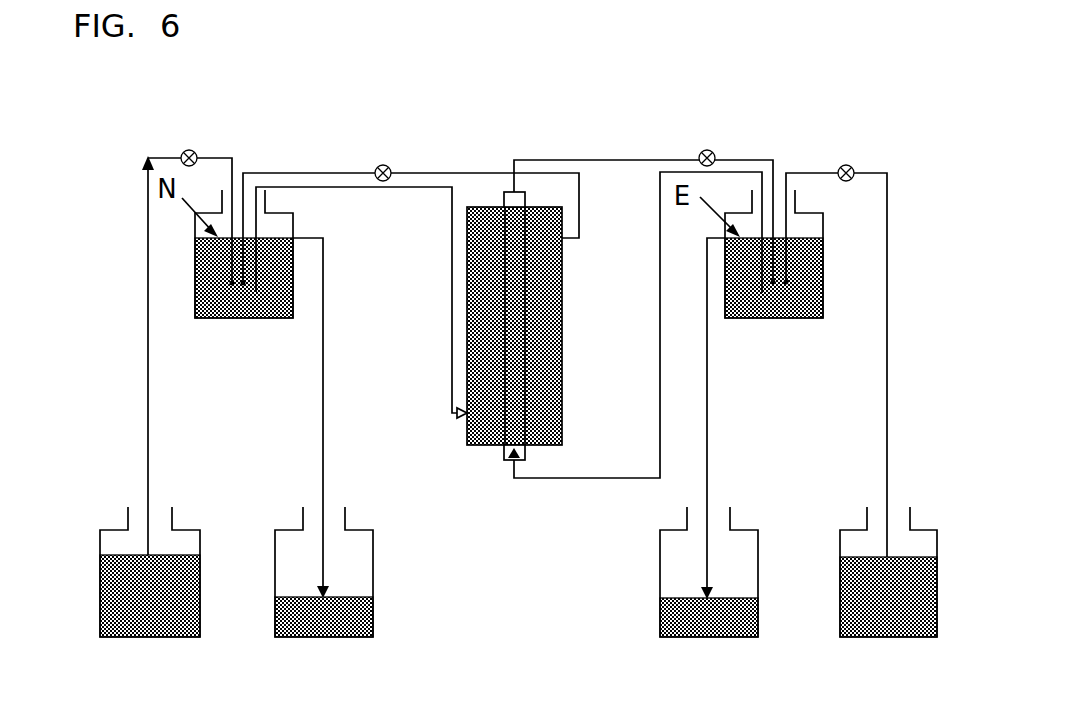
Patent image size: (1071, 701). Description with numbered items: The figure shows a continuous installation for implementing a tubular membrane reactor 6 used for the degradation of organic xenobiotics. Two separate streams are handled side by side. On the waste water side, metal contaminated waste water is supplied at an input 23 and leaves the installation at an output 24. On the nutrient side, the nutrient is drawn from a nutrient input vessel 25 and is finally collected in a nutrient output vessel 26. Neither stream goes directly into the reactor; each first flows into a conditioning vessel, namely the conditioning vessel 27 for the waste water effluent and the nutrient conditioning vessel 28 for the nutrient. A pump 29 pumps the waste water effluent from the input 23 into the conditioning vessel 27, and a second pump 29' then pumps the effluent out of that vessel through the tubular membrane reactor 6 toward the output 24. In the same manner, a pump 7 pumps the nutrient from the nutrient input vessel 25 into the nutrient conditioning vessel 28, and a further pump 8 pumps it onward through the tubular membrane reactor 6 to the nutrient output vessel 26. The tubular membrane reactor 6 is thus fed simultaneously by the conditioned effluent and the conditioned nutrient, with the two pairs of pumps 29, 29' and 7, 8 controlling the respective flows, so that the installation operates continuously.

The tubular membrane reactor 6 is at (486, 461).
The pump 7 is at (195, 148).
The pump 8 is at (387, 167).
The input 23 is at (840, 612).
The output 24 is at (660, 622).
The nutrient input vessel 25 is at (100, 612).
The nutrient output vessel 26 is at (373, 617).
The conditioning vessel 27 is at (778, 320).
The nutrient conditioning vessel 28 is at (230, 318).
The pump 29 is at (876, 127).
The pump 29' is at (730, 119).